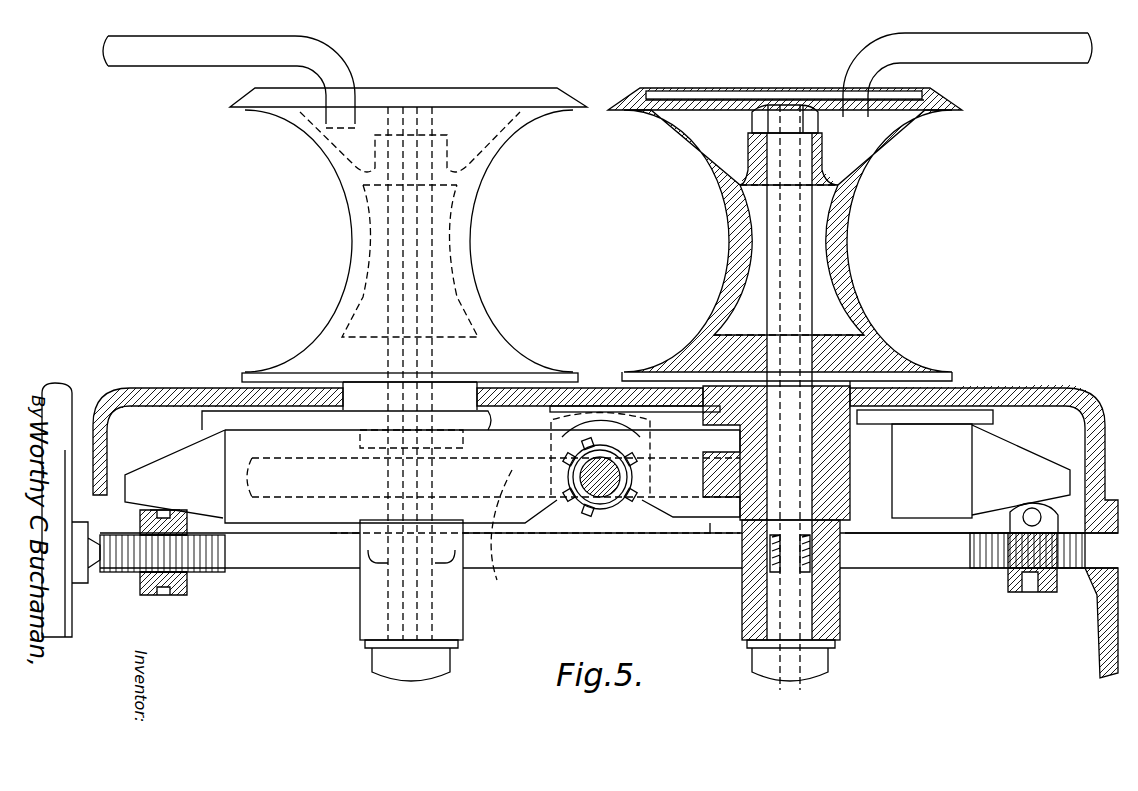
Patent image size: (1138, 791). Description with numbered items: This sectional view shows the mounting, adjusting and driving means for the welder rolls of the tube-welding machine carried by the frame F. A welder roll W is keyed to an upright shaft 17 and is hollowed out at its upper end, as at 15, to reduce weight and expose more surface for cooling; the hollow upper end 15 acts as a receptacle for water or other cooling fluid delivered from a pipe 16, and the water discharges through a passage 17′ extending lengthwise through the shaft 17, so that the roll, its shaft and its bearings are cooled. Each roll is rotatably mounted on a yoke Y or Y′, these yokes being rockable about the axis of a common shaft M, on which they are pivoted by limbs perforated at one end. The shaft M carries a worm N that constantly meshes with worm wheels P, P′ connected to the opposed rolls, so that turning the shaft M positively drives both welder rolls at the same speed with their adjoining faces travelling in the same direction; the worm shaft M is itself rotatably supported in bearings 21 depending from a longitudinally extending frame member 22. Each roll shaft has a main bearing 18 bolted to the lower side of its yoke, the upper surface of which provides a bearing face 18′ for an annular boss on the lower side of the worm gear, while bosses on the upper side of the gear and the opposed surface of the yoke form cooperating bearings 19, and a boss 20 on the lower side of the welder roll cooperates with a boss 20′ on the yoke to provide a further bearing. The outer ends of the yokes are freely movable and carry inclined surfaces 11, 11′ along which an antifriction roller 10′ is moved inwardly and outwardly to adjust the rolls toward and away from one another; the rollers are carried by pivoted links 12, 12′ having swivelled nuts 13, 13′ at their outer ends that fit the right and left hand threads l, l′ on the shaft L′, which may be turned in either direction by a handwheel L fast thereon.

The pipe 16 is at (178, 70).
The welder roll W is at (471, 240).
The hollow upper end 15 is at (685, 110).
The shaft 17 is at (808, 238).
The boss 20 is at (840, 380).
The boss 20′ is at (855, 388).
The frame member 22 is at (656, 410).
The bearing face 18′ is at (745, 545).
The passage 17′ is at (818, 592).
The main bearing 18 is at (450, 610).
The bearings 21 is at (551, 435).
The yoke Y is at (186, 455).
The inclined surface 11 is at (165, 512).
The worm wheel P is at (566, 507).
The worm N is at (592, 512).
The common shaft M is at (603, 500).
The worm wheel P′ is at (706, 522).
The cooperating bearings 19 is at (840, 441).
The yoke Y′ is at (1005, 447).
The inclined surface 11′ is at (990, 520).
The handwheel L is at (66, 600).
The thread l is at (200, 575).
The swivelled nut 13 is at (153, 595).
The pivoted link 12 is at (183, 595).
The shaft L′ is at (897, 560).
The antifriction roller 10′ is at (985, 570).
The swivelled nut 13′ is at (1010, 590).
The pivoted link 12′ is at (1030, 592).
The thread l′ is at (1062, 570).
The frame F is at (1098, 648).